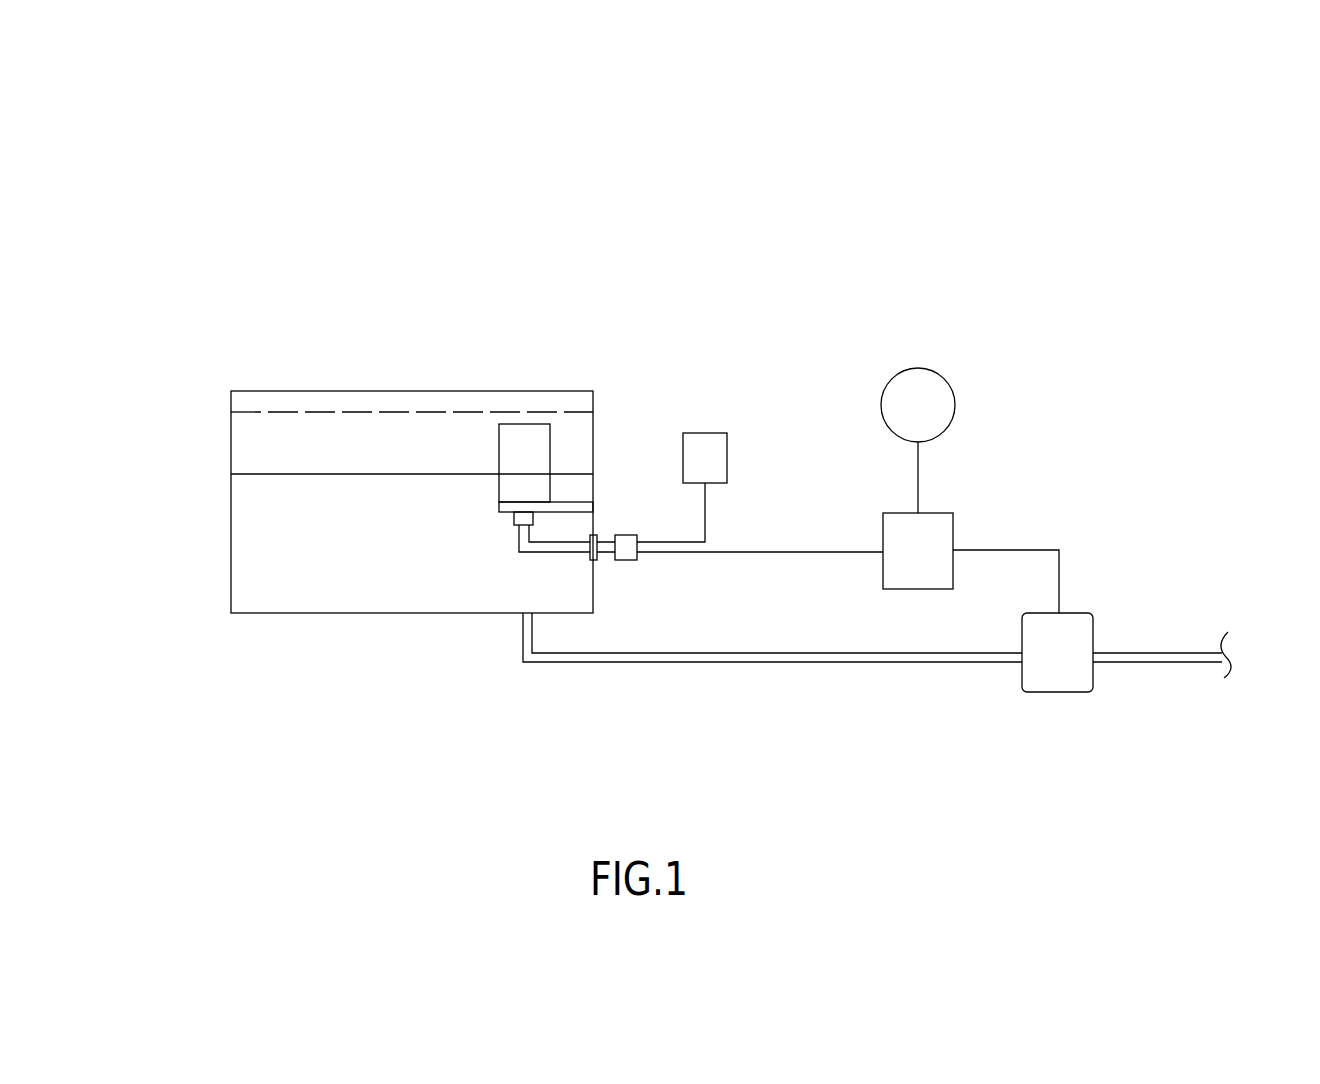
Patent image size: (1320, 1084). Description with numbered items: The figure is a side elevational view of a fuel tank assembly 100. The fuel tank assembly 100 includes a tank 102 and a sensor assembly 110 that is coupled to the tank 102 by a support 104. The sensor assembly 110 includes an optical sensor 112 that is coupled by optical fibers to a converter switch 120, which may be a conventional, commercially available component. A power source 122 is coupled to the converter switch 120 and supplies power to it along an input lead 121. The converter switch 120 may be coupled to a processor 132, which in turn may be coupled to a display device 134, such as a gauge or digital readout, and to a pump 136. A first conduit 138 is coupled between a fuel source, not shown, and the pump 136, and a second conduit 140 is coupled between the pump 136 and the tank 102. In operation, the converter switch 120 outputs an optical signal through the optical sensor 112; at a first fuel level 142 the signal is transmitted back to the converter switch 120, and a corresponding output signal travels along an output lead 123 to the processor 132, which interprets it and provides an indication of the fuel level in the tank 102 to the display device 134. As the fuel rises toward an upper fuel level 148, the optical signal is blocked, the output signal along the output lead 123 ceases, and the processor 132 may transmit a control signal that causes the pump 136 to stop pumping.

The fuel tank assembly 100 is at (278, 186).
The tank 102 is at (513, 391).
The support 104 is at (573, 500).
The sensor assembly 110 is at (458, 502).
The optical sensor 112 is at (499, 440).
The converter switch 120 is at (628, 560).
The input lead 121 is at (705, 515).
The power source 122 is at (705, 433).
The output lead 123 is at (760, 552).
The processor 132 is at (940, 513).
The display device 134 is at (930, 370).
The pump 136 is at (1075, 613).
The first conduit 138 is at (1145, 662).
The second conduit 140 is at (742, 662).
The first fuel level 142 is at (270, 474).
The upper fuel level 148 is at (318, 412).